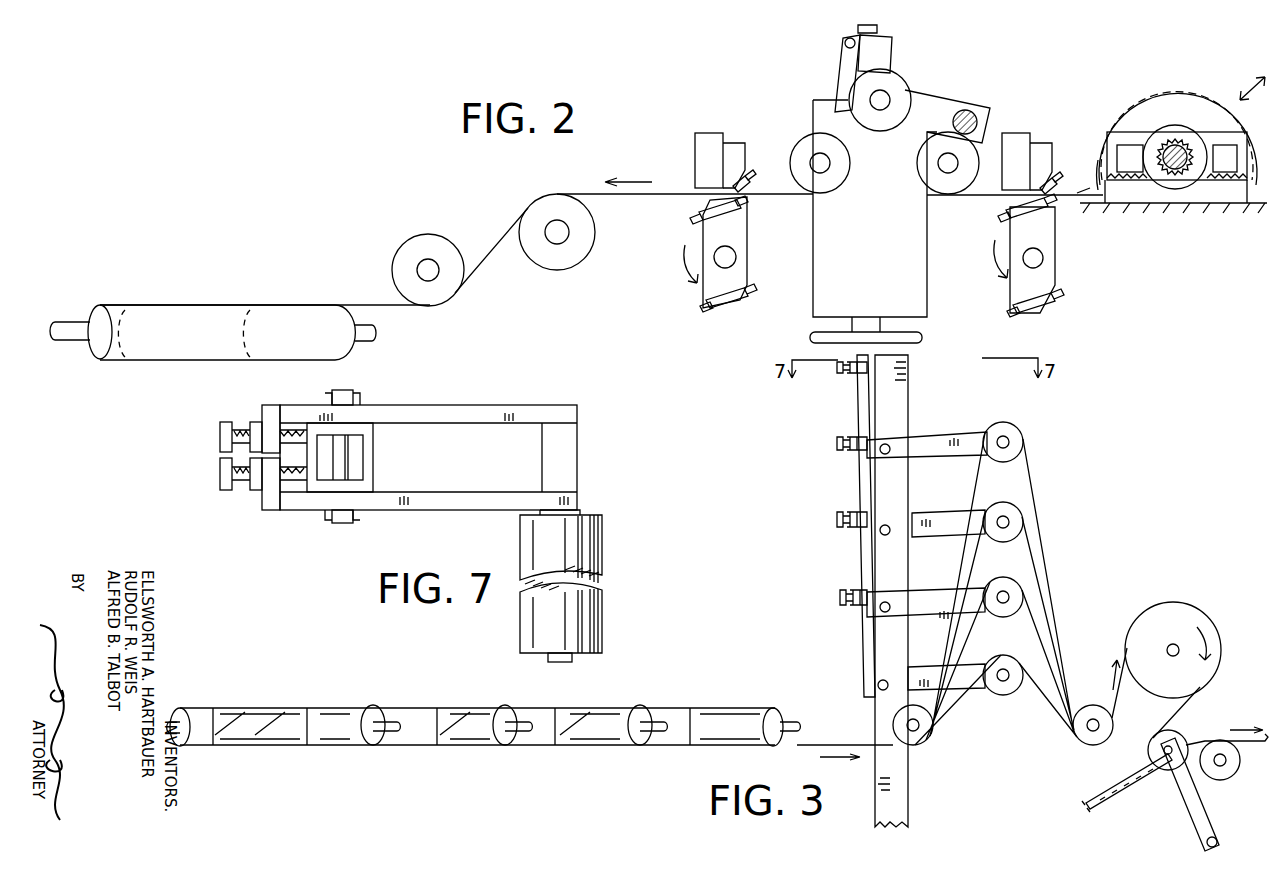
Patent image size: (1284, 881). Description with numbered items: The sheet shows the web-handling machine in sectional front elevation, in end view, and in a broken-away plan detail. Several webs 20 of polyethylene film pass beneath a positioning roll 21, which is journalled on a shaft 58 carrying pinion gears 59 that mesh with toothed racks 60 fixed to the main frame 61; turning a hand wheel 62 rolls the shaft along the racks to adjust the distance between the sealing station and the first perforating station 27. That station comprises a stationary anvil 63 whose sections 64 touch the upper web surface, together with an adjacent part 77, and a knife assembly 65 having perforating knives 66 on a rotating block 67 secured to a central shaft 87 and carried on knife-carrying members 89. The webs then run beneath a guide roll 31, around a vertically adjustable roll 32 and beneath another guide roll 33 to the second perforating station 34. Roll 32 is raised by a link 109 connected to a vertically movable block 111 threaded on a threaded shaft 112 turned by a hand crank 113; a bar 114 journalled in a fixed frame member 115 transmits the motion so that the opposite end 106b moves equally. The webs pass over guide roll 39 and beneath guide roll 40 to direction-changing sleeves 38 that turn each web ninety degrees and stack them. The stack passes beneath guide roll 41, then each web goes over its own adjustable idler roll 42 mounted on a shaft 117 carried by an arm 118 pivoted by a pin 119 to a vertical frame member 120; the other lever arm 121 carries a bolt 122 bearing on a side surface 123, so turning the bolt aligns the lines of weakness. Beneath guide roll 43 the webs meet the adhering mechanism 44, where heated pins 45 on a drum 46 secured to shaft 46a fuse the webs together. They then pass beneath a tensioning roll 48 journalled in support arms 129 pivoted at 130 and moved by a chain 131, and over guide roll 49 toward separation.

In FIG. 2, the web 20 is at (617, 193).
In FIG. 3, the web 20 is at (815, 745).
In FIG. 2, the positioning roll 21 is at (1152, 137).
In FIG. 2, the first perforating station 27 is at (1051, 127).
In FIG. 2, the guide roll 31 is at (946, 186).
In FIG. 2, the vertically adjustable roll 32 is at (903, 87).
In FIG. 2, the guide roll 33 is at (805, 148).
In FIG. 2, the second perforating station 34 is at (736, 122).
In FIG. 2, the web direction changing sleeve 38 is at (338, 345).
In FIG. 3, the web direction changing sleeve 38 is at (445, 735).
In FIG. 2, the guide roll 39 is at (582, 244).
In FIG. 2, the guide roll 40 is at (400, 262).
In FIG. 3, the guide roll 41 is at (918, 740).
In FIG. 7, the vertically adjustable idler roll 42 is at (594, 598).
In FIG. 3, the vertically adjustable idler roll 42 is at (1003, 462).
In FIG. 3, the guide roll 43 is at (1088, 740).
In FIG. 3, the adhering mechanism 44 is at (1216, 594).
In FIG. 3, the heated pin 45 is at (1180, 598).
In FIG. 3, the drum 46 is at (1160, 613).
In FIG. 3, the drum shaft 46a is at (1167, 648).
In FIG. 3, the web tensioning guide roll 48 is at (1180, 742).
In FIG. 3, the guide roll 49 is at (1228, 772).
In FIG. 2, the shaft 58 is at (1170, 142).
In FIG. 2, the pinion gear 59 is at (1195, 138).
In FIG. 2, the toothed rack 60 is at (1228, 193).
In FIG. 2, the main frame 61 is at (1195, 208).
In FIG. 2, the hand wheel 62 is at (1182, 95).
In FIG. 2, the stationary anvil 63 is at (1014, 140).
In FIG. 2, the anvil section 64 is at (727, 185).
In FIG. 2, the knife assembly 65 is at (1071, 282).
In FIG. 2, the perforating knife 66 is at (745, 205).
In FIG. 2, the rotating block 67 is at (738, 280).
In FIG. 2, the brake shoe 77 is at (737, 152).
In FIG. 2, the central shaft 87 is at (736, 257).
In FIG. 2, the knife-carrying member 89 is at (1020, 205).
In FIG. 2, the opposite end of roll shaft 106b is at (887, 73).
In FIG. 2, the link 109 is at (843, 62).
In FIG. 2, the vertically movable block 111 is at (892, 50).
In FIG. 2, the threaded shaft 112 is at (848, 40).
In FIG. 2, the hand crank 113 is at (922, 336).
In FIG. 2, the bar 114 is at (972, 113).
In FIG. 2, the fixed frame member 115 is at (942, 103).
In FIG. 7, the shaft 117 is at (572, 660).
In FIG. 3, the shaft 117 is at (1003, 528).
In FIG. 7, the arm 118 is at (482, 415).
In FIG. 3, the arm 118 is at (935, 512).
In FIG. 7, the pivot pin 119 is at (328, 517).
In FIG. 3, the pivot pin 119 is at (889, 682).
In FIG. 7, the vertical frame member 120 is at (373, 460).
In FIG. 3, the vertical frame member 120 is at (898, 565).
In FIG. 7, the lever arm 121 is at (270, 415).
In FIG. 3, the lever arm 121 is at (857, 465).
In FIG. 7, the bolt 122 is at (226, 476).
In FIG. 3, the bolt 122 is at (845, 595).
In FIG. 3, the side surface 123 is at (873, 383).
In FIG. 3, the support arm 129 is at (1195, 805).
In FIG. 3, the pivotal connection 130 is at (1217, 840).
In FIG. 3, the chain 131 is at (1108, 797).